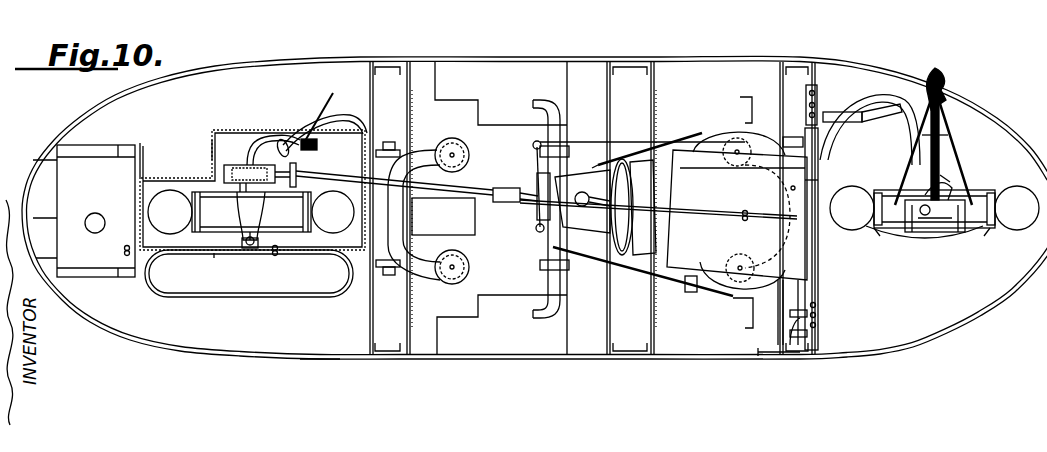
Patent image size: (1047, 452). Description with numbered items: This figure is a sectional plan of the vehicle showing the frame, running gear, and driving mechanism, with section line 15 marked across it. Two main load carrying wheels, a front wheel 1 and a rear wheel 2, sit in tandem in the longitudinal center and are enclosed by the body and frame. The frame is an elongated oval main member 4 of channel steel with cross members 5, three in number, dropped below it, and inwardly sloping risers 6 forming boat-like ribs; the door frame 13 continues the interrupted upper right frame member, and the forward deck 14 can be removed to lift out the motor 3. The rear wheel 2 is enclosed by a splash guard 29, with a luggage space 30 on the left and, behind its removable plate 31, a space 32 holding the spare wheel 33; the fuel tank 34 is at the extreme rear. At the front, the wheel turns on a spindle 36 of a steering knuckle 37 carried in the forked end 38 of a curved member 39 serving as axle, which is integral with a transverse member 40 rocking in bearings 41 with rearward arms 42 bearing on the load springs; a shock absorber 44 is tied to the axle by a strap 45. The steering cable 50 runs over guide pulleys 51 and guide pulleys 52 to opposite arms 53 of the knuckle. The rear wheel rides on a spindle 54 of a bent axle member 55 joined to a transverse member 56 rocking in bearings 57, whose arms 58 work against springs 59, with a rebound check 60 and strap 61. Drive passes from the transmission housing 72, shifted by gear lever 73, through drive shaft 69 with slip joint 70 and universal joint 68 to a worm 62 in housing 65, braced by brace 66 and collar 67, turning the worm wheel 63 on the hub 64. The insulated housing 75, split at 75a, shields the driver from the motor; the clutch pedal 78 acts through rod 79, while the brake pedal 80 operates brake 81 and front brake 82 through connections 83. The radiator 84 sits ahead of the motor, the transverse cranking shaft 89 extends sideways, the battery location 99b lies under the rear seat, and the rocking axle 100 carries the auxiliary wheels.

The front wheel 1 is at (934, 208).
The rear wheel 2 is at (251, 212).
The motor 3 is at (633, 207).
The main frame member 4 is at (551, 62).
The cross members 5 is at (402, 86).
The risers 6 is at (383, 63).
The door frame 13 is at (226, 392).
The forward deck 14 is at (985, 383).
The section line 15 is at (490, 392).
The splash guard 29 is at (243, 130).
The space 30 is at (273, 70).
The removable plate 31 is at (214, 255).
The space 32 is at (308, 343).
The spare wheel 33 is at (239, 272).
The fuel tank 34 is at (96, 211).
The spindle 36 is at (930, 242).
The steering knuckle 37 is at (952, 189).
The forked end 38 is at (950, 179).
The curved member 39 is at (886, 104).
The transverse member 40 is at (791, 189).
The bearings 41 is at (790, 135).
The arms 42 is at (725, 160).
The shock absorber 44 is at (830, 113).
The strap 45 is at (873, 118).
The cable 50 is at (960, 147).
The guide pulleys 51 is at (925, 150).
The guide pulleys 52 is at (945, 80).
The arms 53 is at (875, 231).
The spindle 54 is at (255, 215).
The bent axle member 55 is at (265, 137).
The transverse member 56 is at (388, 212).
The bearings 57 is at (392, 141).
The arms 58 is at (438, 152).
The springs 59 is at (466, 147).
The rebound check 60 is at (345, 116).
The strap 61 is at (325, 106).
The worm 62 is at (240, 165).
The worm wheel 63 is at (224, 172).
The hub 64 is at (240, 214).
The housing 65 is at (214, 150).
The brace 66 is at (284, 139).
The collar 67 is at (305, 138).
The universal joint 68 is at (298, 171).
The drive shaft 69 is at (468, 192).
The slip joint 70 is at (508, 192).
The transmission housing 72 is at (573, 201).
The gear shifting lever 73 is at (596, 190).
The insulated housing 75 is at (737, 215).
The separable portions 75a is at (745, 215).
The clutch pedal 78 is at (735, 108).
The rod 79 is at (688, 145).
The brake pedal 80 is at (745, 313).
The brake 81 is at (537, 232).
The brake 82 is at (908, 239).
The brake connections 83 is at (590, 141).
The radiator 84 is at (812, 187).
The transverse shaft 89 is at (800, 290).
The storage battery location 99b is at (445, 217).
The axle 100 is at (558, 118).